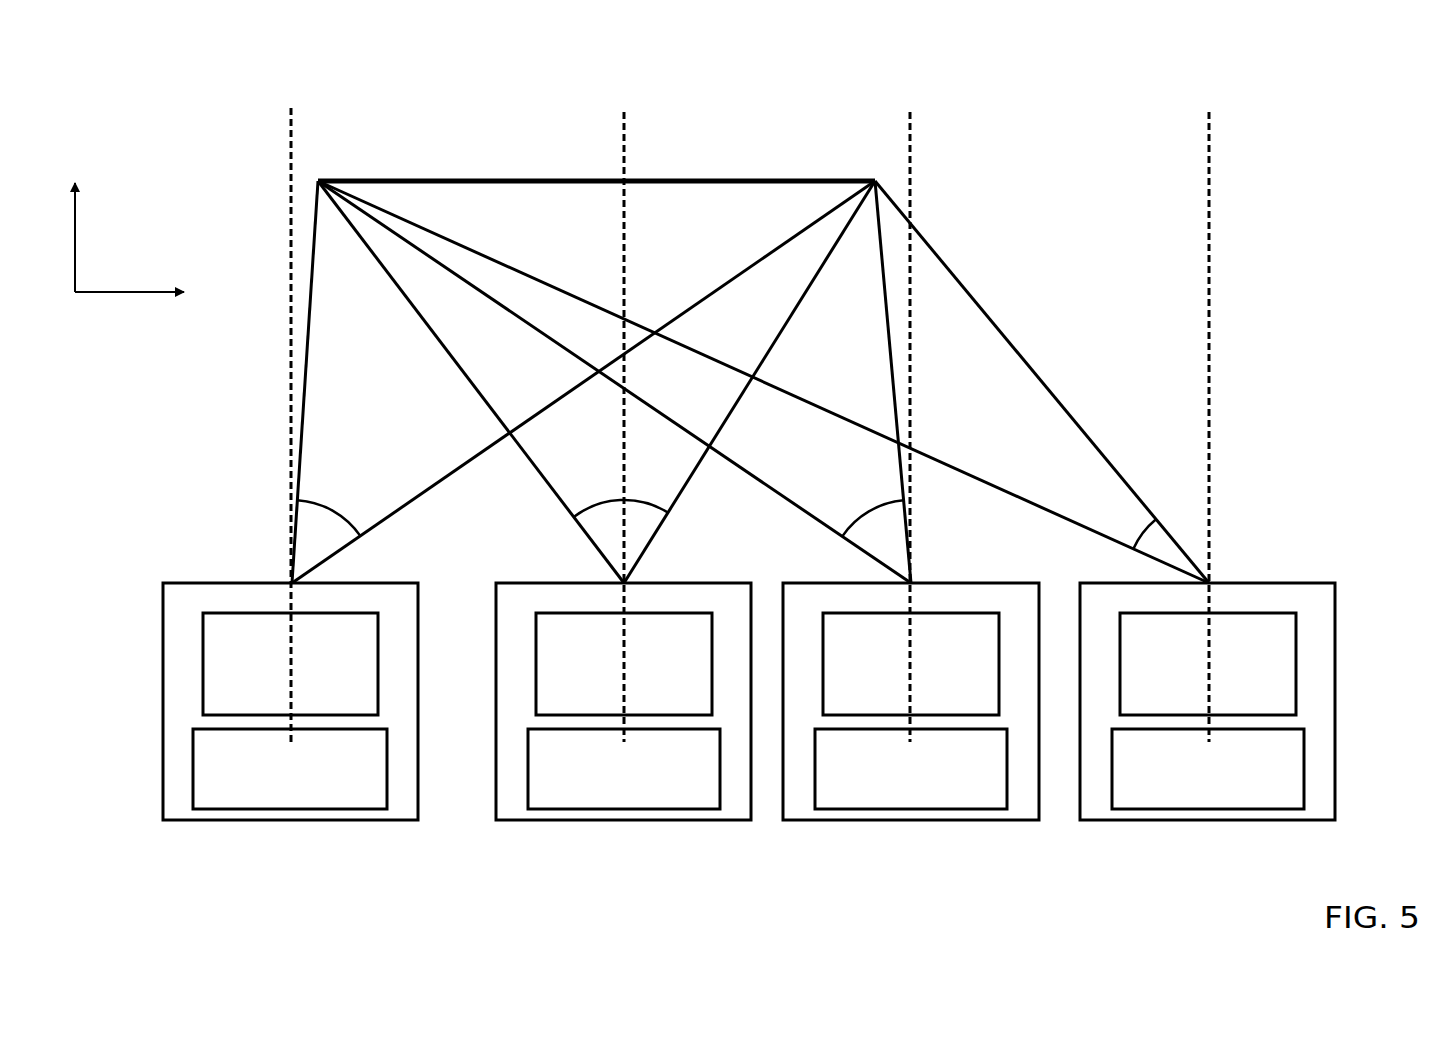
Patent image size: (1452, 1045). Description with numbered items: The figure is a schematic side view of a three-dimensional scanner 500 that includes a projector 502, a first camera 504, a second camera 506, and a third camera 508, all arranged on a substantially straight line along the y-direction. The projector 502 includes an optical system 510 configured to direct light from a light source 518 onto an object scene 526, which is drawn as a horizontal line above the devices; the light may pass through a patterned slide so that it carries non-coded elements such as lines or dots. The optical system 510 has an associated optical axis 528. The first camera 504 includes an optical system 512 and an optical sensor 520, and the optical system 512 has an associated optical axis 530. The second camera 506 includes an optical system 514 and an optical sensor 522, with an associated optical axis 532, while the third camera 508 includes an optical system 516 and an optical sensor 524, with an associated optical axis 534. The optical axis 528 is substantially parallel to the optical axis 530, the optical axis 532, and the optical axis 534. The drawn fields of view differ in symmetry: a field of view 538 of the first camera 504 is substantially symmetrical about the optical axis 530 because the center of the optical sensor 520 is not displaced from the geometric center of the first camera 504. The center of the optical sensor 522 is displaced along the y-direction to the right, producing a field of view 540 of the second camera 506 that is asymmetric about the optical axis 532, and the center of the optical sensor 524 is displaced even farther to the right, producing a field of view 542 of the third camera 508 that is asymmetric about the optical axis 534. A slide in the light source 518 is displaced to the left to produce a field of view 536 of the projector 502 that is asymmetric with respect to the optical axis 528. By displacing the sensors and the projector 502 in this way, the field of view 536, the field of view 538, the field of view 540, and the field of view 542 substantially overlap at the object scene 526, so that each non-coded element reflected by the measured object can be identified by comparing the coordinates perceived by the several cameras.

The 3D scanner 500 is at (1340, 247).
The projector 502 is at (200, 820).
The first camera 504 is at (508, 820).
The second camera 506 is at (810, 820).
The third camera 508 is at (1108, 820).
The optical system 510 is at (290, 664).
The optical system 512 is at (624, 664).
The optical system 514 is at (911, 664).
The optical system 516 is at (1208, 664).
The light source 518 is at (290, 769).
The optical sensor 520 is at (624, 769).
The optical sensor 522 is at (911, 769).
The optical sensor 524 is at (1208, 769).
The object scene 526 is at (494, 177).
The optical axis 528 is at (292, 136).
The optical axis 530 is at (624, 132).
The optical axis 532 is at (909, 138).
The optical axis 534 is at (1209, 150).
The field of view 536 is at (340, 511).
The field of view 538 is at (588, 510).
The field of view 540 is at (848, 525).
The field of view 542 is at (1137, 535).